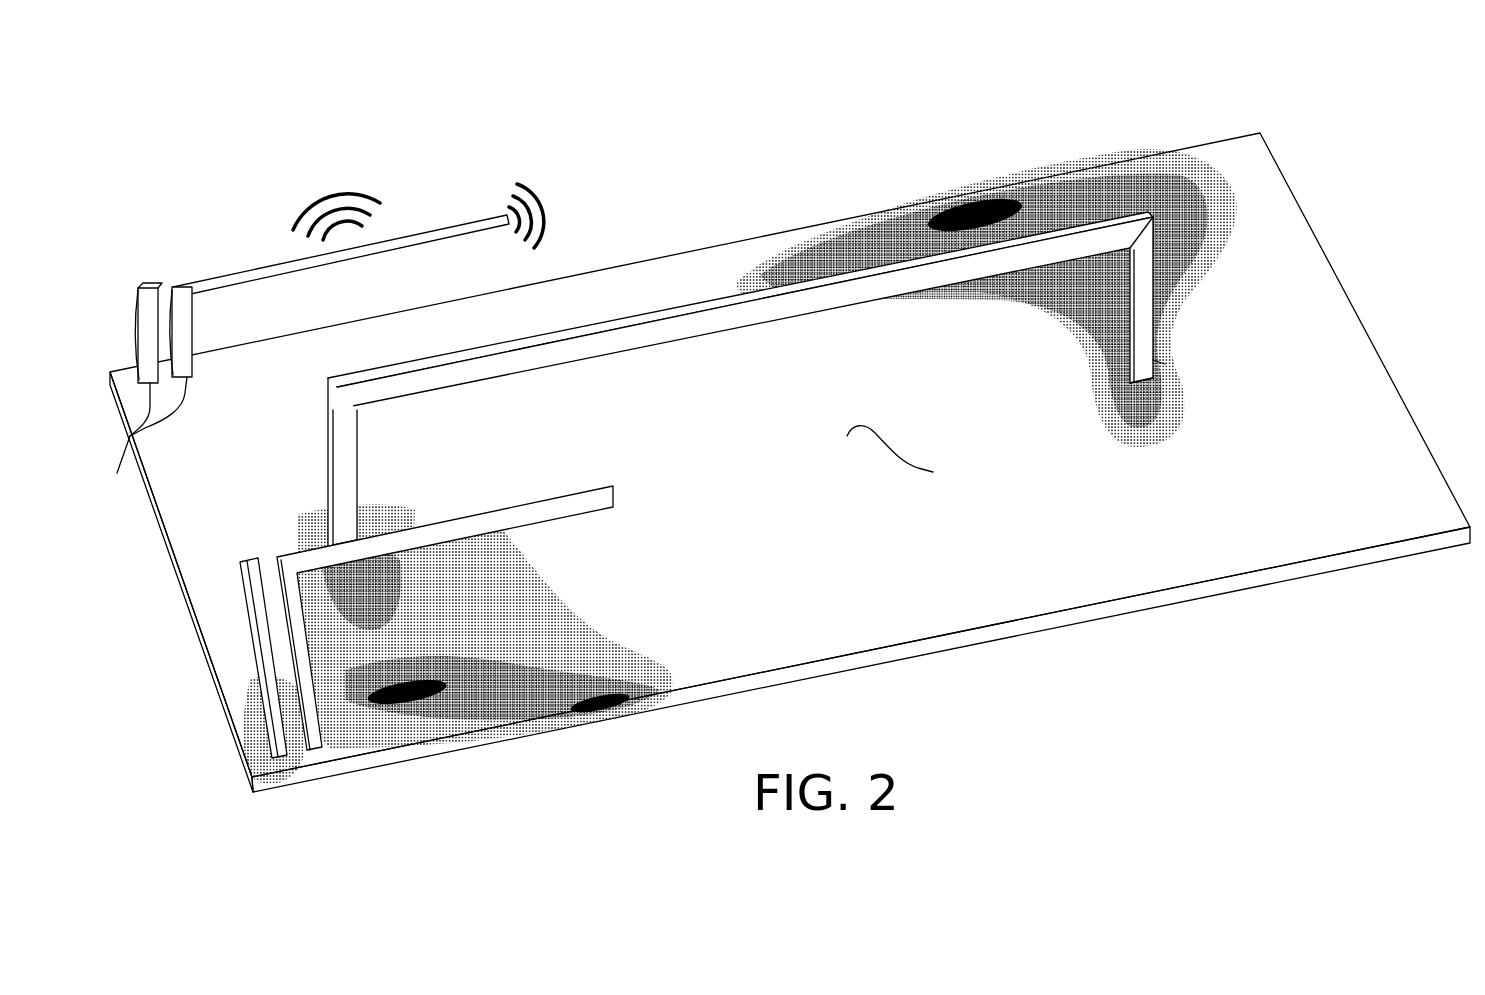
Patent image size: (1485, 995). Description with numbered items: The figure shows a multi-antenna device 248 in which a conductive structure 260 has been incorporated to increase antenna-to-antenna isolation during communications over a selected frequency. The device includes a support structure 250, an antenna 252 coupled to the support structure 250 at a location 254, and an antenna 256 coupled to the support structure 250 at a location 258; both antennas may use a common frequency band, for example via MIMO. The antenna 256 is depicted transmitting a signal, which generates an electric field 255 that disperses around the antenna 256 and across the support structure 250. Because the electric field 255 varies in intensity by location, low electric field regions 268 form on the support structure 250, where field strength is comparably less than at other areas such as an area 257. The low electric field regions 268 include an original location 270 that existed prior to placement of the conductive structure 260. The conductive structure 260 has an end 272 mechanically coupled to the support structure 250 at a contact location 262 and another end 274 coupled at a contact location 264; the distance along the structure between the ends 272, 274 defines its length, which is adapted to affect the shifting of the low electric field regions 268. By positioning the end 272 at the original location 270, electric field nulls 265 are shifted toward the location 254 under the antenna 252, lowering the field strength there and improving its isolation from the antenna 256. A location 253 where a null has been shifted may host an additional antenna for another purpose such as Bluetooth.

The multi-antenna device 248 is at (262, 118).
The support structure 250 is at (1290, 565).
The antenna 252 is at (275, 727).
The location 253 is at (993, 208).
The location 254 is at (312, 753).
The electric field 255 is at (380, 203).
The antenna 256 is at (200, 281).
The area 257 is at (910, 455).
The location 258 is at (143, 437).
The conductive structure 260 is at (700, 303).
The contact location 262 is at (1155, 378).
The contact location 264 is at (327, 542).
The electric field nulls 265 is at (970, 212).
The low electric field regions 268 is at (1092, 378).
The original location 270 is at (1138, 387).
The end 272 is at (1162, 364).
The end 274 is at (357, 535).